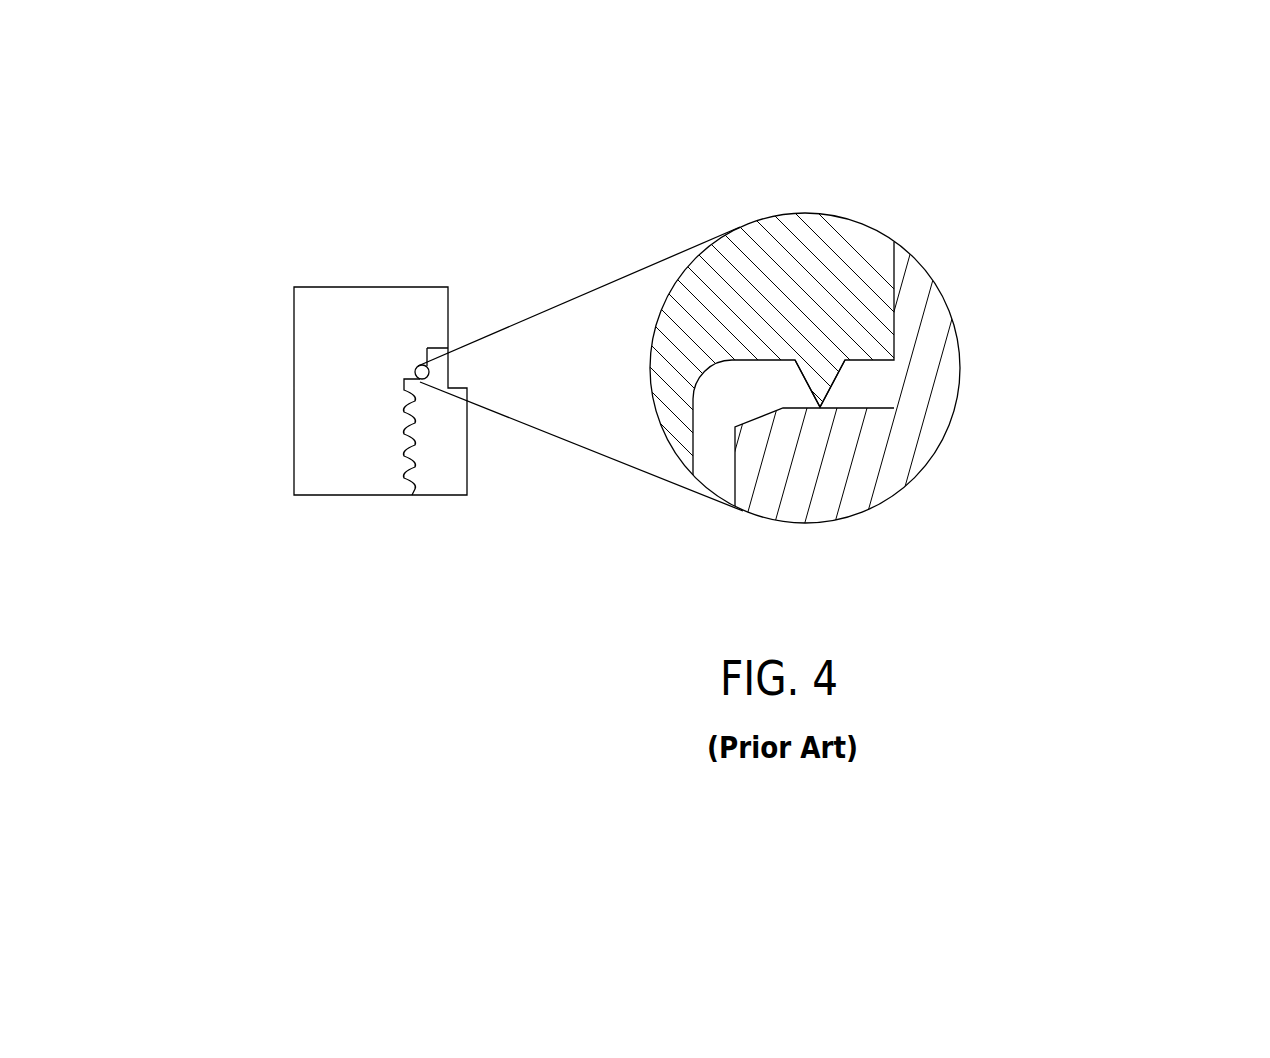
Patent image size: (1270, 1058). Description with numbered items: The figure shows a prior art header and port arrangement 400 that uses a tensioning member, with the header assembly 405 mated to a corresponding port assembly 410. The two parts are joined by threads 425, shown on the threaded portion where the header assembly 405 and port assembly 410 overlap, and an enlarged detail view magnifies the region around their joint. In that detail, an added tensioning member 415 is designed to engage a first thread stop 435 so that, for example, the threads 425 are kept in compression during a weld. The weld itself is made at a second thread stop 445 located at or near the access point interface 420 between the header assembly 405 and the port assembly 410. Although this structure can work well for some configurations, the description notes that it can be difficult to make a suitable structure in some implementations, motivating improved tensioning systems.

The prior art closure assembly 400 is at (705, 107).
The header assembly 405 is at (835, 295).
The port assembly 410 is at (863, 455).
The tensioning member 415 is at (835, 383).
The access point interface 420 is at (455, 348).
The threads 425 is at (416, 443).
The first thread stop 435 is at (848, 406).
The second thread stop 445 is at (442, 348).